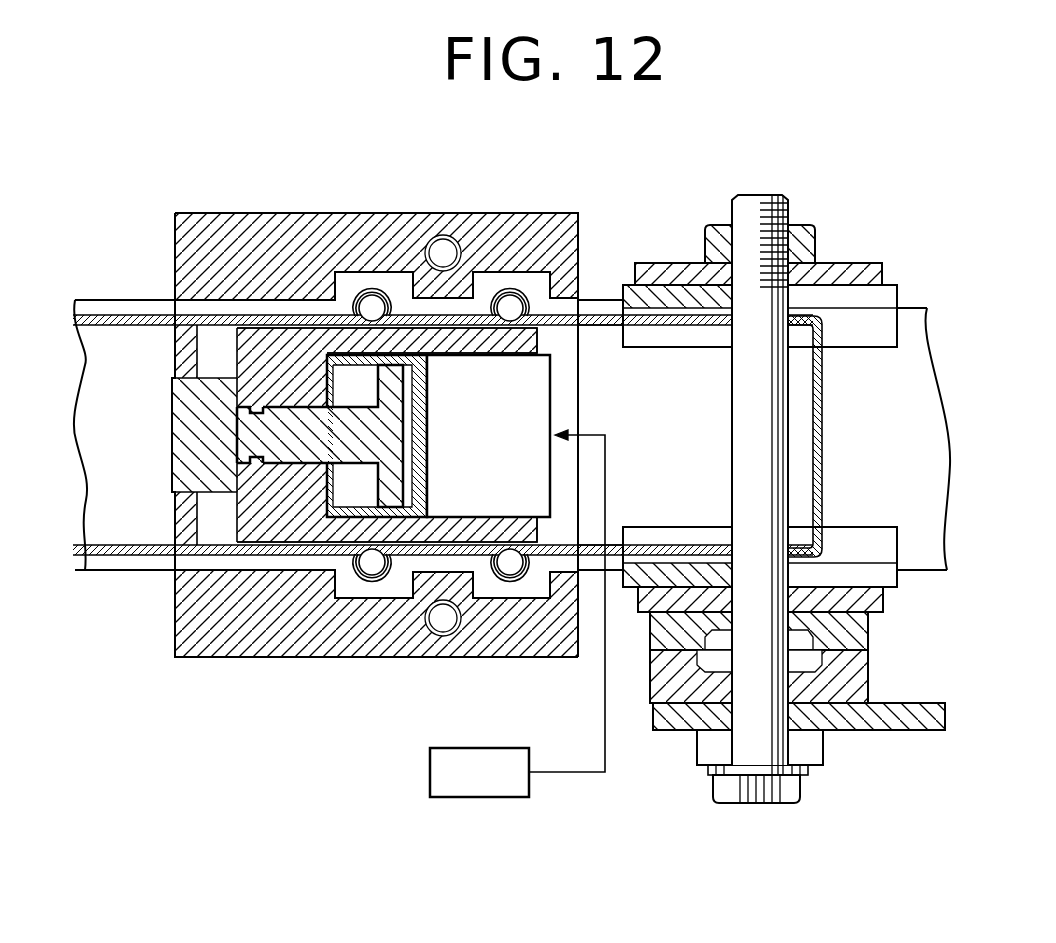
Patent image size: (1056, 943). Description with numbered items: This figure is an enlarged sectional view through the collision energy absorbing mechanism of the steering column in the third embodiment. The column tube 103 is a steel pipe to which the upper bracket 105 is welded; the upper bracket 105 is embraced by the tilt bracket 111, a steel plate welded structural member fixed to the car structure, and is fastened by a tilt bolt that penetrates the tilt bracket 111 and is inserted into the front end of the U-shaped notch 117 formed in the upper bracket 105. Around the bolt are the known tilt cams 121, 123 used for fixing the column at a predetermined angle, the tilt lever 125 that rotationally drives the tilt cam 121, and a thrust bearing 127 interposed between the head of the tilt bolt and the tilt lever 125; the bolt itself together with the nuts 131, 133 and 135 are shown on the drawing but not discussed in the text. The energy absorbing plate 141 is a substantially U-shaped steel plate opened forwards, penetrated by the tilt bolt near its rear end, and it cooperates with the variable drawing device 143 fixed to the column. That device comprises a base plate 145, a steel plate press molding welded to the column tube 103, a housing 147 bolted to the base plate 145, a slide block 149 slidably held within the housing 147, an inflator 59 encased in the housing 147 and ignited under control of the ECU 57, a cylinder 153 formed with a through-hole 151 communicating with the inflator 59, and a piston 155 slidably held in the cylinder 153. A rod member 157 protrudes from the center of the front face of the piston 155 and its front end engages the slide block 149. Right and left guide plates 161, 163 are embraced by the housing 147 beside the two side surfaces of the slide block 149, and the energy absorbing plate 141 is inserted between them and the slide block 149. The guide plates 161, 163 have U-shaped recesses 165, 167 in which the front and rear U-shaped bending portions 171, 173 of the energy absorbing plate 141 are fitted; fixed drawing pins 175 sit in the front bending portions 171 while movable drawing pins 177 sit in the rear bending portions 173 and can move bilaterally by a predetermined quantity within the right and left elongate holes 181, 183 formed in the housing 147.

The ECU 57 is at (430, 758).
The inflator 59 is at (540, 388).
The column tube 103 is at (947, 485).
The upper distance bracket 105 is at (905, 327).
The tilt bracket 111 is at (865, 263).
The U-shaped notch 117 is at (885, 298).
The tilt cam 121 is at (868, 672).
The tilt cam 123 is at (868, 630).
The tilt lever 125 is at (928, 730).
The thrust bearing 127 is at (823, 755).
The bolt 131 is at (760, 485).
The nut 133 is at (790, 800).
The nut 135 is at (812, 235).
The energy absorbing plate 141 is at (822, 440).
The variable drawing device 143 is at (170, 182).
The base plate 145 is at (624, 435).
The housing 147 is at (175, 242).
The slide block 149 is at (170, 434).
The through-hole 151 is at (420, 438).
The cylinder 153 is at (320, 640).
The piston 155 is at (376, 396).
The rod member 157 is at (285, 440).
The guide plate 161 is at (240, 640).
The guide plate 163 is at (233, 300).
The U-shaped recess 165 is at (350, 300).
The U-shaped recess 167 is at (480, 296).
The front U-shaped bending portion 171 is at (392, 290).
The rear U-shaped bending portion 173 is at (540, 300).
The fixed drawing pin 175 is at (372, 296).
The movable drawing pin 177 is at (508, 296).
The elongate hole 181 is at (556, 600).
The elongate hole 183 is at (595, 322).